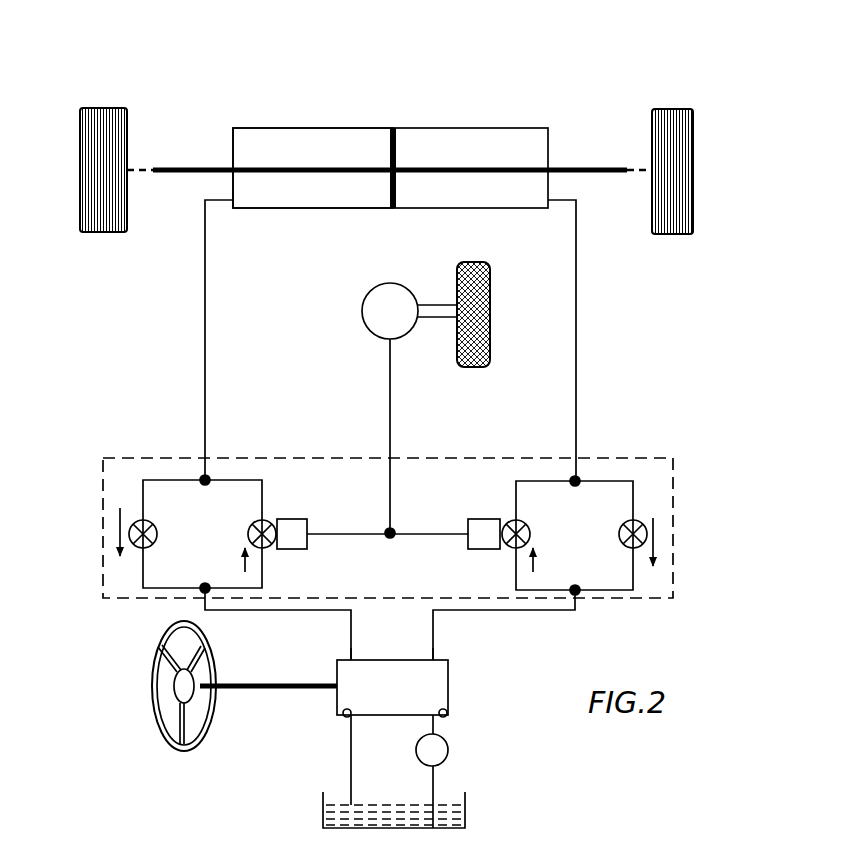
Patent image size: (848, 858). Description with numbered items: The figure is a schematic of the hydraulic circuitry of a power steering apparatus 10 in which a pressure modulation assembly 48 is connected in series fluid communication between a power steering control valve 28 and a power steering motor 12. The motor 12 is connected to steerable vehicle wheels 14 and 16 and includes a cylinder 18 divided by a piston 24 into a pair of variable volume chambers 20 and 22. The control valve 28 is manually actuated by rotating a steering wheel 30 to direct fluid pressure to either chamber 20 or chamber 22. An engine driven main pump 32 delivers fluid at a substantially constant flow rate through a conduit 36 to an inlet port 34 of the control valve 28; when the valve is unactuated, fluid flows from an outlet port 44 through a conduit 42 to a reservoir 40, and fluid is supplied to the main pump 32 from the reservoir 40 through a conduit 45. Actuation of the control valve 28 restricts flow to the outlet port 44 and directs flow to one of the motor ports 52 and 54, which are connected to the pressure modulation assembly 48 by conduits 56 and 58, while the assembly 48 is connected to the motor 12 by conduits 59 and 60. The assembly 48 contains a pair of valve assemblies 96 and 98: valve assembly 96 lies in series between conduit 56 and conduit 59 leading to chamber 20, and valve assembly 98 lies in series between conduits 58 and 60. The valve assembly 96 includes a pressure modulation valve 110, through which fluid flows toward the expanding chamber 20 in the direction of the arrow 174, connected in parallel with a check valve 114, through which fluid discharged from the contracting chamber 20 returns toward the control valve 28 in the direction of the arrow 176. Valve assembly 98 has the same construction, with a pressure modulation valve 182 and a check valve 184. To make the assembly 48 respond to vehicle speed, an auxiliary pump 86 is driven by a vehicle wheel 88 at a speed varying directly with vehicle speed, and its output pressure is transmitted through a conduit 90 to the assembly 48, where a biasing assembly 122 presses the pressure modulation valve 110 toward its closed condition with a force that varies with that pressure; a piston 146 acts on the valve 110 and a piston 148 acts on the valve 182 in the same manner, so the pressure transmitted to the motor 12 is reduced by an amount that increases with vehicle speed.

The power steering apparatus 10 is at (544, 740).
The power steering motor 12 is at (514, 124).
The steerable vehicle wheel 14 is at (102, 126).
The steerable vehicle wheel 16 is at (683, 128).
The cylinder 18 is at (312, 128).
The variable volume chamber 20 is at (282, 194).
The variable volume chamber 22 is at (432, 194).
The piston 24 is at (396, 128).
The power steering control valve 28 is at (442, 691).
The steering wheel 30 is at (152, 696).
The main pump 32 is at (418, 755).
The inlet port 34 is at (447, 712).
The conduit 36 is at (436, 726).
The reservoir 40 is at (323, 812).
The conduit 42 is at (351, 766).
The outlet port 44 is at (345, 718).
The conduit 45 is at (434, 779).
The pressure modulation assembly 48 is at (680, 492).
The motor port 52 is at (351, 659).
The motor port 54 is at (433, 655).
The conduit 56 is at (351, 612).
The conduit 58 is at (433, 625).
The conduit 59 is at (205, 292).
The conduit 60 is at (577, 349).
The auxiliary pump 86 is at (362, 311).
The vehicle wheel 88 is at (465, 366).
The conduit 90 is at (390, 397).
The valve assembly 96 is at (177, 474).
The valve assembly 98 is at (625, 475).
The pressure modulation valve 110 is at (256, 521).
The check valve 114 is at (136, 522).
The biasing assembly 122 is at (414, 524).
The piston 146 is at (293, 521).
The piston 148 is at (478, 541).
The arrow 174 is at (244, 557).
The arrow 176 is at (119, 536).
The pressure modulation valve 182 is at (521, 521).
The check valve 184 is at (624, 541).